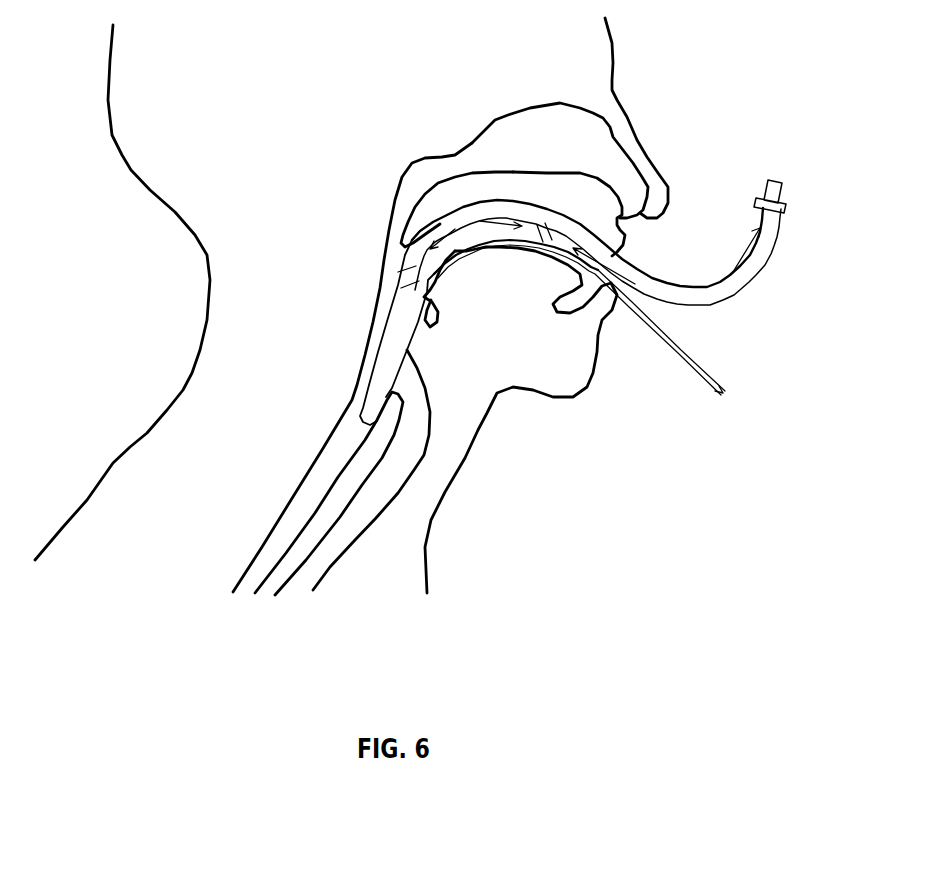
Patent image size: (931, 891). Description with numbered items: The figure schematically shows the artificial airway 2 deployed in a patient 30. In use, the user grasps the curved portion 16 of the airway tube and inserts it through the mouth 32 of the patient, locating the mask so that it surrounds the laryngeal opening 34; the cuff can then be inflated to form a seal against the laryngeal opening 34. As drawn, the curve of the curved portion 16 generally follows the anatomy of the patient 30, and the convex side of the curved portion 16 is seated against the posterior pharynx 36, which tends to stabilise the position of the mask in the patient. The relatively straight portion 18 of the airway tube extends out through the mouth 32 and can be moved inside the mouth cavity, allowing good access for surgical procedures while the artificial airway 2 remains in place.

The artificial airway 2 is at (706, 222).
The curved portion 16 is at (465, 226).
The straight portion 18 is at (727, 290).
The patient 30 is at (131, 173).
The mouth 32 is at (597, 283).
The laryngeal opening 34 is at (407, 387).
The posterior pharynx 36 is at (424, 215).